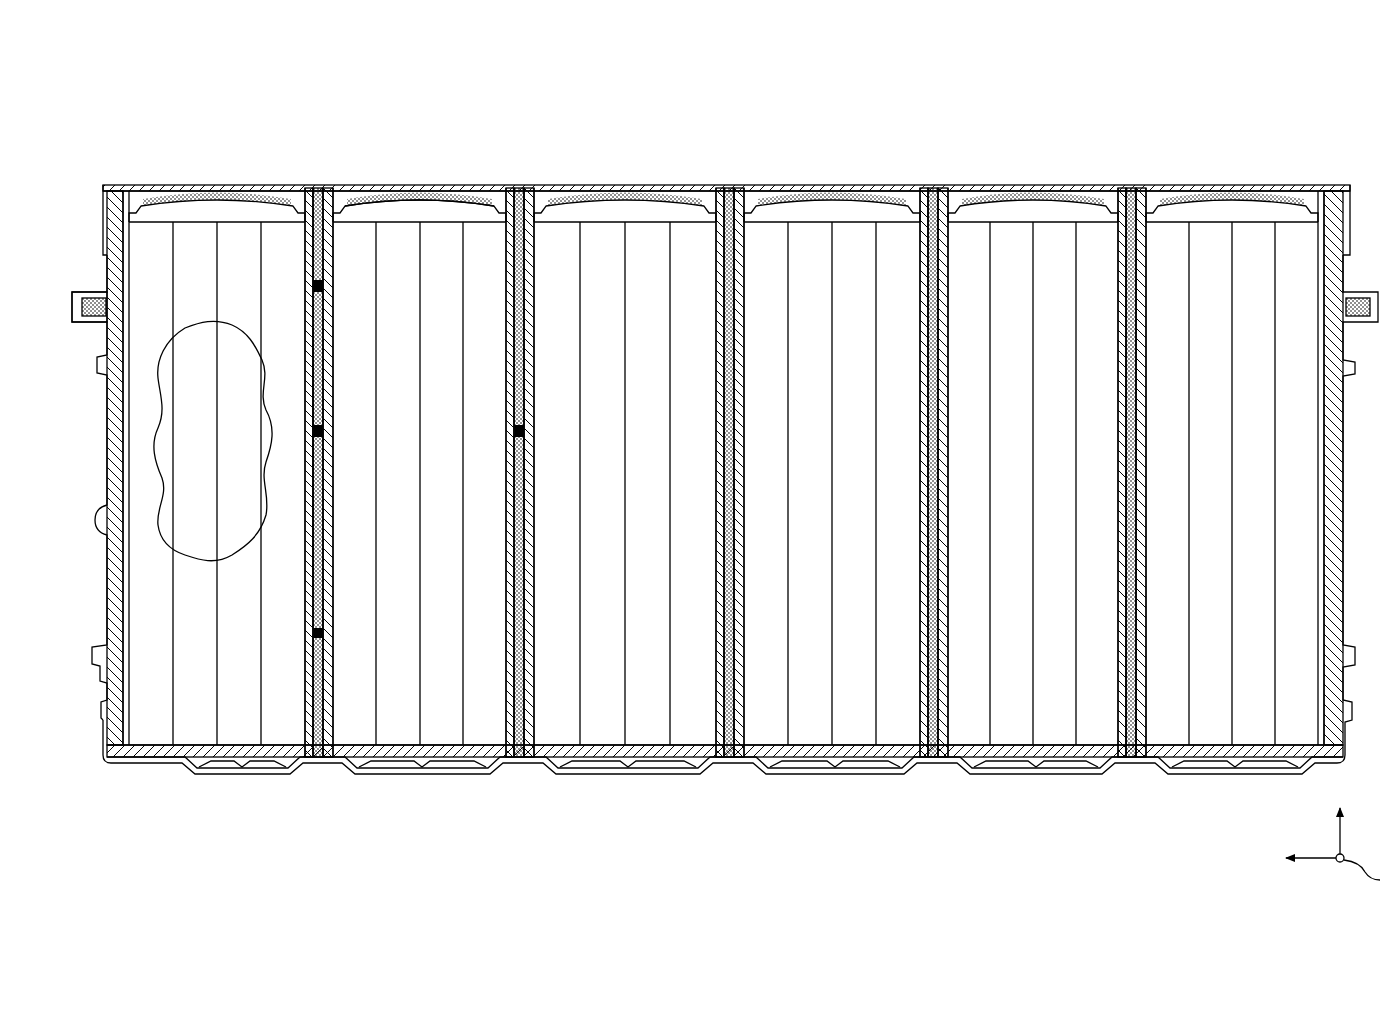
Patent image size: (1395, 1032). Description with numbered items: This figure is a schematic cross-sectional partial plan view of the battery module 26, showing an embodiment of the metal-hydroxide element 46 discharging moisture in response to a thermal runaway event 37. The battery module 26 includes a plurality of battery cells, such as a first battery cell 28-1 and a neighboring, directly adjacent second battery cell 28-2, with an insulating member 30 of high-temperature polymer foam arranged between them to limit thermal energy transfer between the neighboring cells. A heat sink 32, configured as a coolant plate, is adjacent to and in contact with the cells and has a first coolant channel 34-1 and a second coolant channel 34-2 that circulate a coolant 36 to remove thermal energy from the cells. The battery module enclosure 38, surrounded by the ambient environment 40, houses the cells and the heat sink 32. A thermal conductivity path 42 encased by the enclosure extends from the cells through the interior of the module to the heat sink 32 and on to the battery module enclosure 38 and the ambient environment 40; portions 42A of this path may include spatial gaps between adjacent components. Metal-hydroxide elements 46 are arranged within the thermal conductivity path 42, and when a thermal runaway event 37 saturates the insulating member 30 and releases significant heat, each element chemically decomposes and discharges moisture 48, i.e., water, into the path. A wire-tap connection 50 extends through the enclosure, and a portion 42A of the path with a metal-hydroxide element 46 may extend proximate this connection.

The battery module 26 is at (1354, 468).
The first battery cell 28-1 is at (152, 214).
The second battery cell 28-2 is at (370, 215).
The insulating member 30 is at (343, 215).
The heat sink 32 is at (148, 768).
The first coolant channel 34-1 is at (195, 770).
The second coolant channel 34-2 is at (445, 770).
The coolant 36 is at (300, 780).
The thermal runaway event 37 is at (206, 450).
The battery module enclosure 38 is at (105, 430).
The ambient environment 40 is at (1029, 63).
The thermal conductivity path 42 is at (319, 188).
The portion of the thermal conductivity path 42A is at (150, 188).
The metal-hydroxide element 46 is at (228, 194).
The moisture 48 is at (326, 328).
The wire-tap connection 50 is at (95, 322).